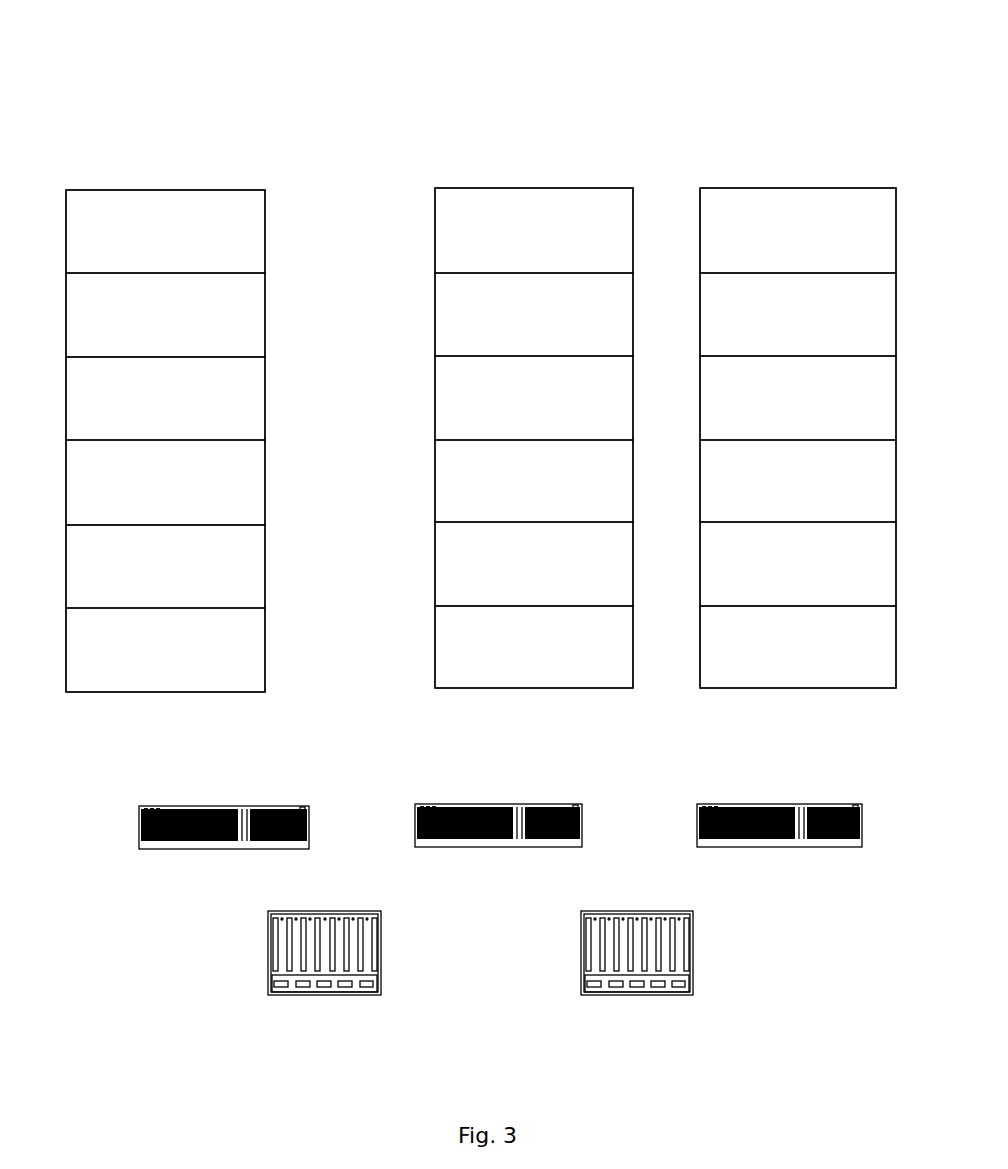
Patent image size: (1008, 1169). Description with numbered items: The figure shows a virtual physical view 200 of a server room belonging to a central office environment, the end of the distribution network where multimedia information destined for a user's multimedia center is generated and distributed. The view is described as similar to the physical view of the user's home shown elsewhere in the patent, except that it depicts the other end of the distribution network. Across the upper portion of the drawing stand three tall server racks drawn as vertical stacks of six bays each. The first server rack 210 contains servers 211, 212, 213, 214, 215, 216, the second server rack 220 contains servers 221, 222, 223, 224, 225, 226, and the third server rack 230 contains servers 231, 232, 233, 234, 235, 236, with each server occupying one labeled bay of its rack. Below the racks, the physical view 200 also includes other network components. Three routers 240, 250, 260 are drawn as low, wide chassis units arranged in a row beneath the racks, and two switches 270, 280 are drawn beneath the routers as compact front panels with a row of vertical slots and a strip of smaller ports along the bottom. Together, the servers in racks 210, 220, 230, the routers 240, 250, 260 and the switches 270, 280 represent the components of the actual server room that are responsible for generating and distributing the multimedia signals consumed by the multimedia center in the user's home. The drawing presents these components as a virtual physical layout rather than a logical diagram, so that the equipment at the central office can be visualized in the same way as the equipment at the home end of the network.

The virtual physical view 200 is at (108, 107).
The server rack 210 is at (165, 190).
The server 211 is at (165, 231).
The server 212 is at (165, 315).
The server 213 is at (165, 398).
The server 214 is at (165, 482).
The server 215 is at (165, 566).
The server 216 is at (165, 650).
The server rack 220 is at (533, 188).
The server 221 is at (534, 230).
The server 222 is at (534, 314).
The server 223 is at (534, 398).
The server 224 is at (534, 481).
The server 225 is at (534, 564).
The server 226 is at (534, 647).
The server rack 230 is at (798, 188).
The server 231 is at (798, 230).
The server 232 is at (798, 314).
The server 233 is at (798, 398).
The server 234 is at (798, 481).
The server 235 is at (798, 564).
The server 236 is at (798, 647).
The router 240 is at (223, 806).
The router 250 is at (498, 804).
The router 260 is at (780, 804).
The switch 270 is at (383, 955).
The switch 280 is at (695, 955).